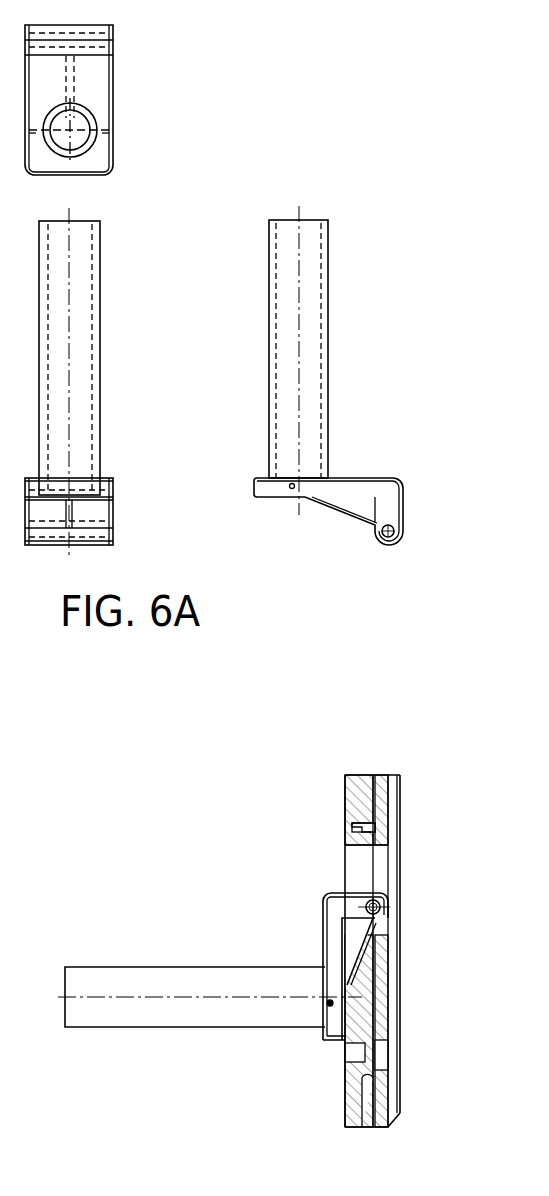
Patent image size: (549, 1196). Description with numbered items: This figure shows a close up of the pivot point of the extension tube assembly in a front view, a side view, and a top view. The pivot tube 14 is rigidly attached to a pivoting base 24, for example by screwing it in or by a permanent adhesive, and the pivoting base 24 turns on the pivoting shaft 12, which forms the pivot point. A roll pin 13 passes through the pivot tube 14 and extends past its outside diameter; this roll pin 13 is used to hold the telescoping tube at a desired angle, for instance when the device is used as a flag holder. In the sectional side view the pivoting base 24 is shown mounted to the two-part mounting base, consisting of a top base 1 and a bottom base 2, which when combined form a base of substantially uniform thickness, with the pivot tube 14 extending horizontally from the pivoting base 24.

The top base 1 is at (340, 820).
The bottom base 2 is at (403, 838).
The pivoting shaft 12 is at (378, 546).
The roll pin 13 is at (283, 492).
The pivot tube 14 is at (105, 343).
The pivoting base 24 is at (351, 470).